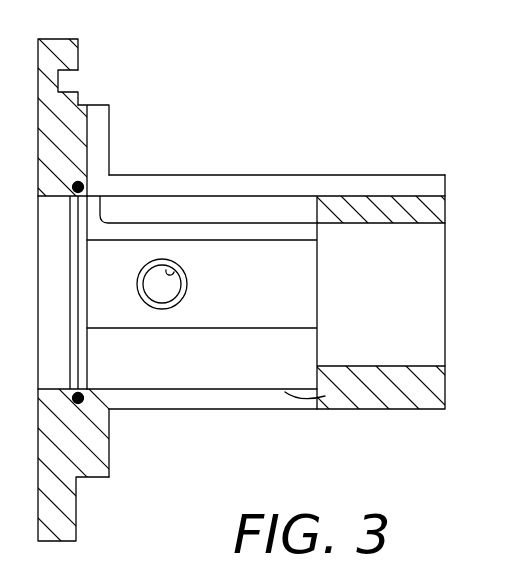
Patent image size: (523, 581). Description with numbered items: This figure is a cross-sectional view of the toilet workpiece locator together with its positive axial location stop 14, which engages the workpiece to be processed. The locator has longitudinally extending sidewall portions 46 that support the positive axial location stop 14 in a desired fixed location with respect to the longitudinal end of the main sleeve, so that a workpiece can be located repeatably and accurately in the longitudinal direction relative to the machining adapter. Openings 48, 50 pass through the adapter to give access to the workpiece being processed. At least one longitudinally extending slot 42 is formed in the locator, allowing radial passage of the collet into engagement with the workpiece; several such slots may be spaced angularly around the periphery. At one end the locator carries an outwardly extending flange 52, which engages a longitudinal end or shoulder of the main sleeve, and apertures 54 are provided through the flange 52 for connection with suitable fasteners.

The positive axial location stop 14 is at (315, 373).
The longitudinally extending slot 42 is at (143, 180).
The longitudinally extending sidewall portions 46 is at (250, 180).
The opening 48 is at (187, 279).
The opening 50 is at (285, 392).
The outwardly extending flange 52 is at (66, 514).
The aperture 54 is at (78, 75).